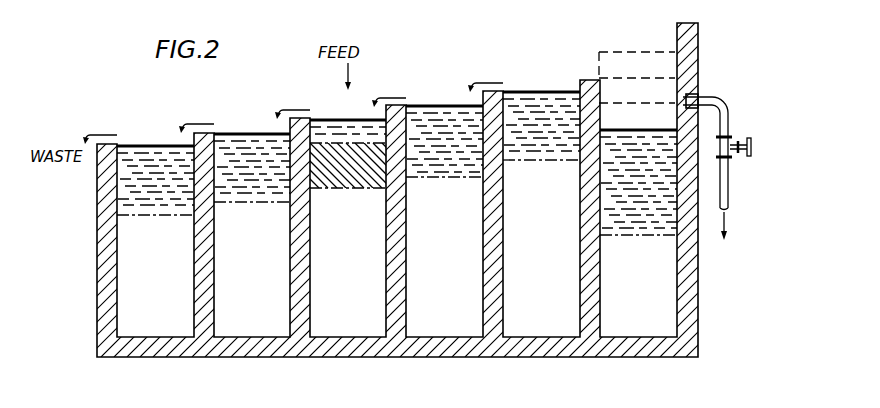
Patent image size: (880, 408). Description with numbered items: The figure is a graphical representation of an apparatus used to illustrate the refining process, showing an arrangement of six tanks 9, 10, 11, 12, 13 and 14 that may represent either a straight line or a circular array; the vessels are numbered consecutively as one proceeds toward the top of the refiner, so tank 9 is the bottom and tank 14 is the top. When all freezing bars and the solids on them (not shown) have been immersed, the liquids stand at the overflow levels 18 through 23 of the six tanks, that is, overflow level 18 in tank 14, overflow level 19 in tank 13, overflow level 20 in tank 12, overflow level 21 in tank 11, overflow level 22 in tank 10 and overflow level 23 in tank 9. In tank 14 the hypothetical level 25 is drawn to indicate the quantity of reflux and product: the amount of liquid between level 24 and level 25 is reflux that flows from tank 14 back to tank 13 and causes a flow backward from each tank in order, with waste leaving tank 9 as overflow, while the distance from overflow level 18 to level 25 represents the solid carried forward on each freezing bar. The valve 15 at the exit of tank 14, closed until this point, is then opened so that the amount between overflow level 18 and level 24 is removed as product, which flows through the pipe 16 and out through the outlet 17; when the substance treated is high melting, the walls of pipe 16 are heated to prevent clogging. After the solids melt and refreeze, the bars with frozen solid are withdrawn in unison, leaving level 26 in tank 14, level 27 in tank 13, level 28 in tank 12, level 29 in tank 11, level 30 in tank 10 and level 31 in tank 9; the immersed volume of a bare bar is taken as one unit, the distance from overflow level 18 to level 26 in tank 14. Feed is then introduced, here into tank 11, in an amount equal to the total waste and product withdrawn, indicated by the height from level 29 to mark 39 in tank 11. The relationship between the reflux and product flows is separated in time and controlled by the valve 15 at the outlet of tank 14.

The tank 9 is at (155, 244).
The tank 10 is at (252, 238).
The tank 11 is at (348, 231).
The tank 12 is at (444, 224).
The tank 13 is at (541, 217).
The tank 14 is at (638, 236).
The valve 15 is at (752, 148).
The pipe 16 is at (728, 194).
The outlet 17 is at (727, 233).
The overflow level 18 is at (627, 91).
The overflow level 19 is at (537, 81).
The overflow level 20 is at (432, 105).
The overflow level 21 is at (362, 108).
The overflow level 22 is at (244, 122).
The overflow level 23 is at (137, 146).
The level 24 is at (627, 65).
The hypothetical level 25 is at (627, 39).
The level 26 is at (627, 118).
The level 27 is at (528, 161).
The level 28 is at (436, 177).
The level 29 is at (328, 189).
The level 30 is at (237, 203).
The level 31 is at (135, 216).
The feed height mark 39 is at (330, 143).